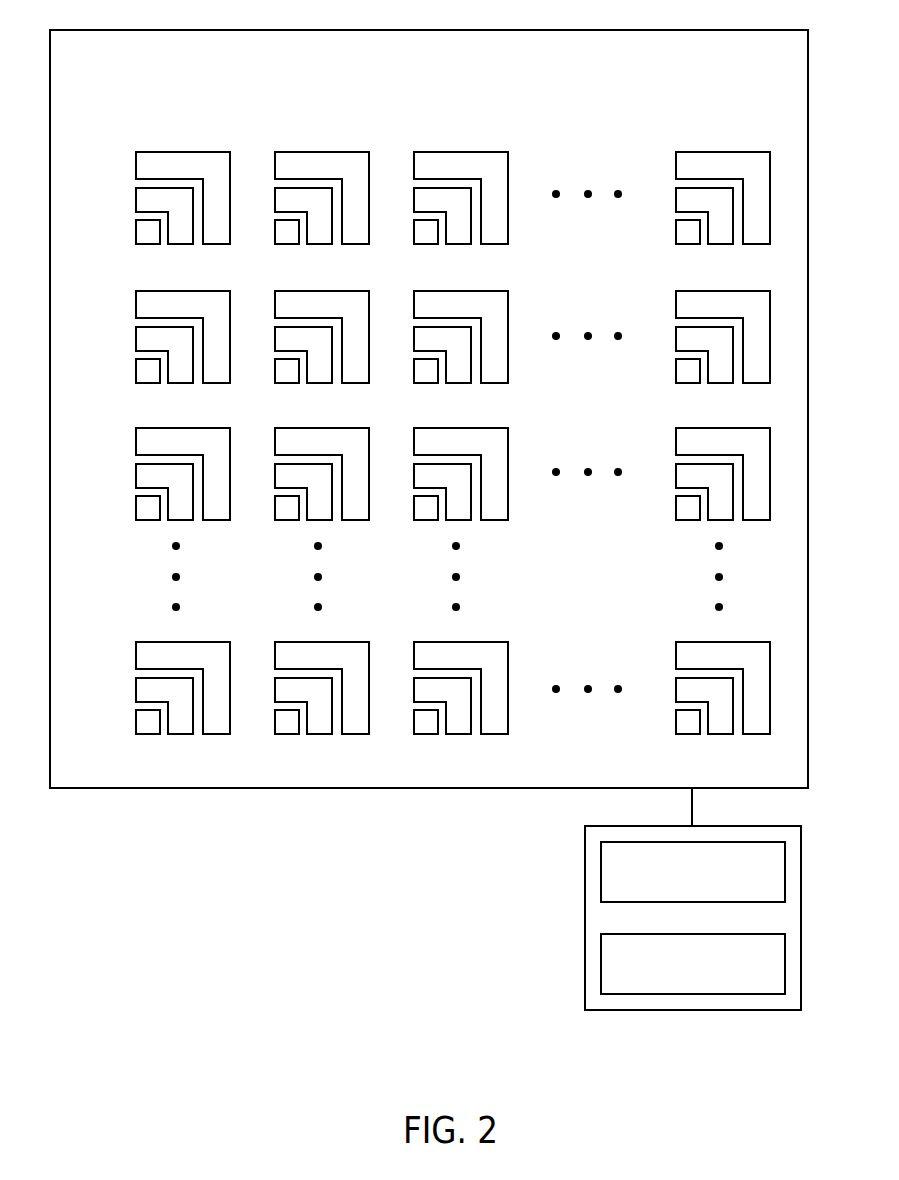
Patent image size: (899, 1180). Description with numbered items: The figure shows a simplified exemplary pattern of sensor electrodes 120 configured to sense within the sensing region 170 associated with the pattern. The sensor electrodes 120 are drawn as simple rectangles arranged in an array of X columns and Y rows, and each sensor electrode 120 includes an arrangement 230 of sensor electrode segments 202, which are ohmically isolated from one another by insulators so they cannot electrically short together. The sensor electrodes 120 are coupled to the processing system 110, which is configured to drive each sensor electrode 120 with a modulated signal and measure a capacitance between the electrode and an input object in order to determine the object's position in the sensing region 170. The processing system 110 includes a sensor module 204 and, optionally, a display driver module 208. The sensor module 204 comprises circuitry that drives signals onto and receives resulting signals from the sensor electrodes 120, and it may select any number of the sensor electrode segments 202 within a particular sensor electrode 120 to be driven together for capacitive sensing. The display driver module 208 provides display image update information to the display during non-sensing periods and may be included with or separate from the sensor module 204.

The sensor electrode 120 is at (413, 398).
The sensor electrode segment 202 is at (155, 152).
The arrangement of sensor electrode segments 230 is at (148, 178).
The sensing region 170 is at (207, 789).
The processing system 110 is at (585, 843).
The sensor module 204 is at (601, 874).
The display driver module 208 is at (601, 950).